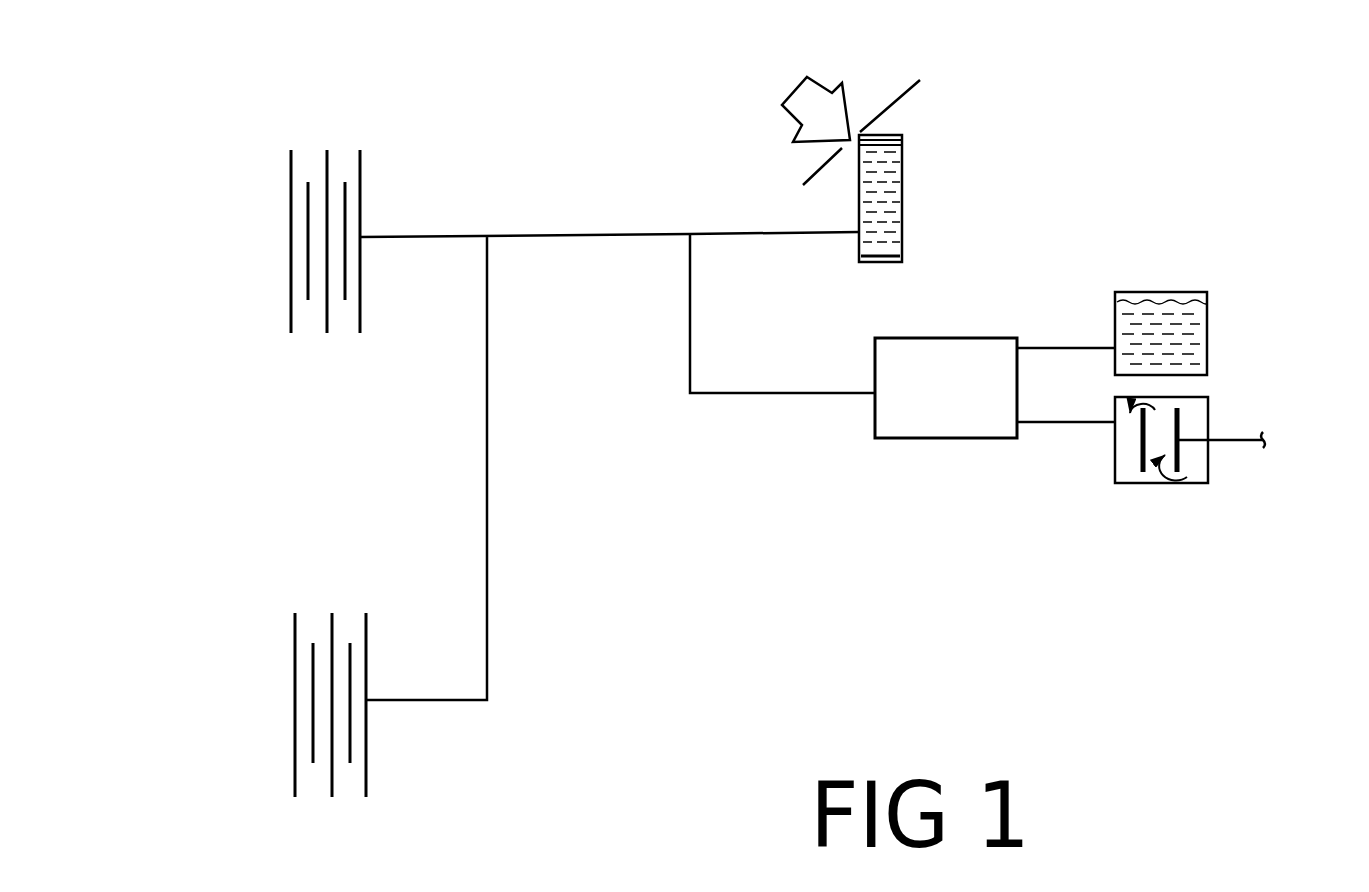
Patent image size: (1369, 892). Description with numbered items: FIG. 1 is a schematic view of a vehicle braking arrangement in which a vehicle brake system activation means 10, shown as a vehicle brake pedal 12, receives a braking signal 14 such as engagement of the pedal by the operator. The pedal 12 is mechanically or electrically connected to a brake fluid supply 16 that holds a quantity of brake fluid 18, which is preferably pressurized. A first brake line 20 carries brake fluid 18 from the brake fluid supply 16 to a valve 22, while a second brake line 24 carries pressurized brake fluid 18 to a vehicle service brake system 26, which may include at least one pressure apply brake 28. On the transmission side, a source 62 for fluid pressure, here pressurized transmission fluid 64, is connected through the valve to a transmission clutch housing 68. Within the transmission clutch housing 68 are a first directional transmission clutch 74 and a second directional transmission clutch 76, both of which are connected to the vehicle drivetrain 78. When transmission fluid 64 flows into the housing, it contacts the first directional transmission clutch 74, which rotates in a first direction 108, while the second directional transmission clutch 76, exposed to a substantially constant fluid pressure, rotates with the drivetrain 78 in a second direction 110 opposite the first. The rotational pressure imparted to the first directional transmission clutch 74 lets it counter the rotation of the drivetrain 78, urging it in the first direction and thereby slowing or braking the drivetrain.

The vehicle brake system activation means 10 is at (762, 65).
The vehicle brake pedal 12 is at (897, 100).
The braking signal 14 is at (782, 112).
The brake fluid supply 16 is at (898, 132).
The brake fluid 18 is at (900, 197).
The first brake line 20 is at (783, 228).
The valve 22 is at (880, 336).
The second brake line 24 is at (603, 232).
The vehicle service brake system 26 is at (253, 363).
The pressure apply brake 28 is at (345, 142).
The source for fluid pressure 62 is at (1175, 307).
The pressurized transmission fluid 64 is at (1203, 345).
The transmission clutch housing 68 is at (1183, 456).
The first directional transmission clutch 74 is at (1138, 462).
The second directional transmission clutch 76 is at (1162, 455).
The vehicle drivetrain 78 is at (1243, 425).
The first direction 108 is at (1127, 400).
The second direction 110 is at (1182, 477).